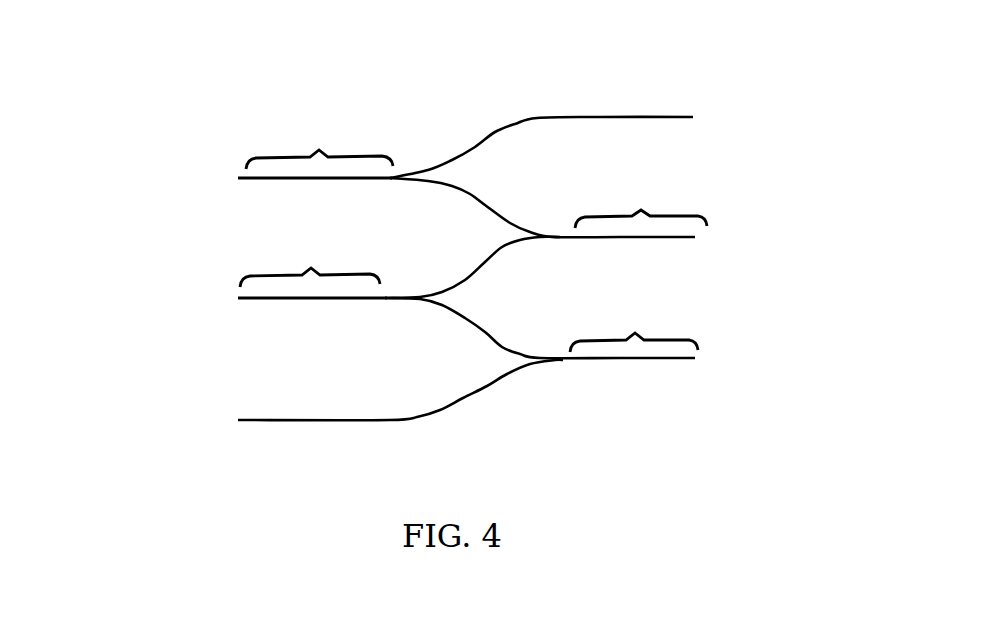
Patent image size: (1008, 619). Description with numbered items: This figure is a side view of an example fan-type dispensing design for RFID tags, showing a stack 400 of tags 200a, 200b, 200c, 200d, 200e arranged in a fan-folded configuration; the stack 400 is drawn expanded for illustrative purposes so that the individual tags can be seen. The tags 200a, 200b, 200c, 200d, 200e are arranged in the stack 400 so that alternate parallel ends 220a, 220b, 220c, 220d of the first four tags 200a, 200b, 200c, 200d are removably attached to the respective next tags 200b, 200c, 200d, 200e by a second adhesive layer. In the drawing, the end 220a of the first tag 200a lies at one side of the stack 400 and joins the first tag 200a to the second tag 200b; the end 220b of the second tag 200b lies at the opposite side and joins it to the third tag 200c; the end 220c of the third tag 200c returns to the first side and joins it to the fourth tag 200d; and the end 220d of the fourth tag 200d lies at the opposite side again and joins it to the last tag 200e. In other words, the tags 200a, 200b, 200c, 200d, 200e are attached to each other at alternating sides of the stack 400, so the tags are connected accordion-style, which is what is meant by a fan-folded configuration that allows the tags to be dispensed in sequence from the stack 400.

The stack 400 is at (128, 51).
The tag 200a is at (742, 118).
The tag 200b is at (485, 208).
The tag 200c is at (490, 263).
The tag 200d is at (490, 330).
The tag 200e is at (487, 390).
The end 220a is at (315, 146).
The end 220b is at (641, 201).
The end 220c is at (312, 268).
The end 220d is at (638, 324).